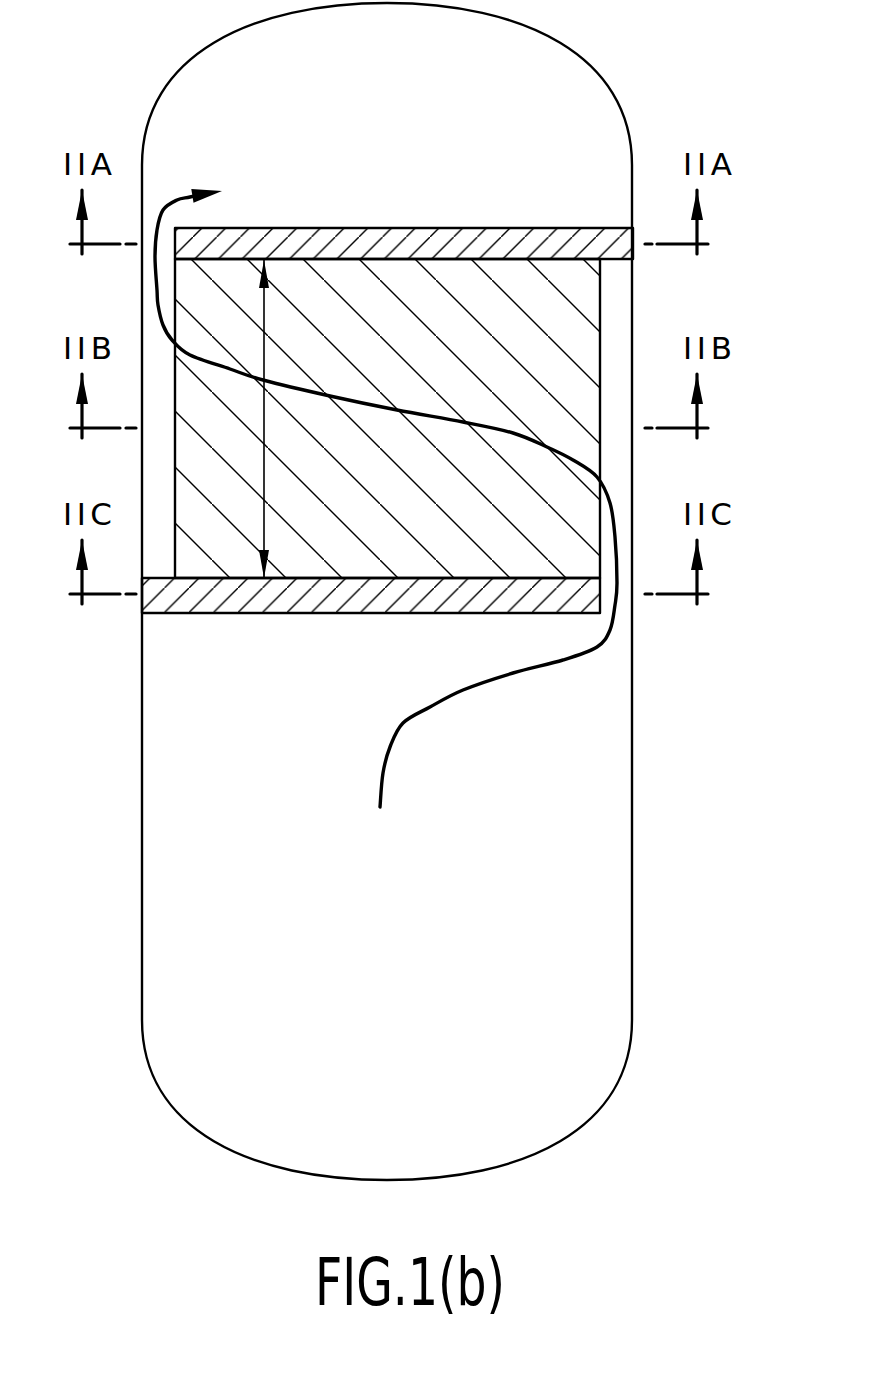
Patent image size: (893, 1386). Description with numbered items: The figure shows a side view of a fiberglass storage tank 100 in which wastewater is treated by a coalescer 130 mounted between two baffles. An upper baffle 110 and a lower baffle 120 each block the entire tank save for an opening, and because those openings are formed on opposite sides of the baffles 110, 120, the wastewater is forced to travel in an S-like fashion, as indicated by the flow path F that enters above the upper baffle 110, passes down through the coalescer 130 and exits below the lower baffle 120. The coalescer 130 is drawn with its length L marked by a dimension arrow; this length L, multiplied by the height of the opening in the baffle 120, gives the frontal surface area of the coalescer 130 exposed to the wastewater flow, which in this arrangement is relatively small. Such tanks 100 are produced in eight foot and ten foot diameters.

The tank 100 is at (607, 942).
The baffle 110 is at (235, 240).
The baffle 120 is at (200, 604).
The coalescer 130 is at (572, 352).
The length of the coalescer L is at (265, 467).
The flow path F is at (386, 518).